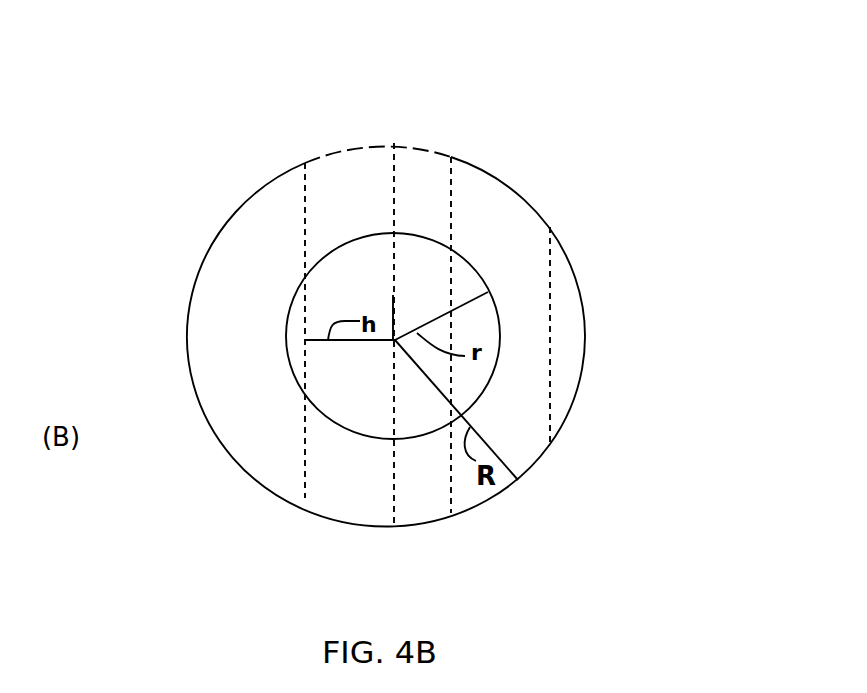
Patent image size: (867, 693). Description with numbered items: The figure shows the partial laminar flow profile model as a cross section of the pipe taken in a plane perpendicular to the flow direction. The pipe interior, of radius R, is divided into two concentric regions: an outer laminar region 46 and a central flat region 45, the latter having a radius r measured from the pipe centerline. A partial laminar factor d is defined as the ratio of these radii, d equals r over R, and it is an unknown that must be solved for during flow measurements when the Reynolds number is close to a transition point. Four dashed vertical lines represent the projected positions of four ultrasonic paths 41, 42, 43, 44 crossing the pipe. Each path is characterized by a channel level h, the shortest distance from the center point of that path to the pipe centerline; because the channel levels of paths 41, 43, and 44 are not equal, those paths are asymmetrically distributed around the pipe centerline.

The ultrasonic path 41 is at (305, 200).
The ultrasonic path 42 is at (395, 188).
The ultrasonic path 43 is at (452, 205).
The ultrasonic path 44 is at (550, 257).
The flat region 45 is at (340, 270).
The laminar region 46 is at (379, 165).